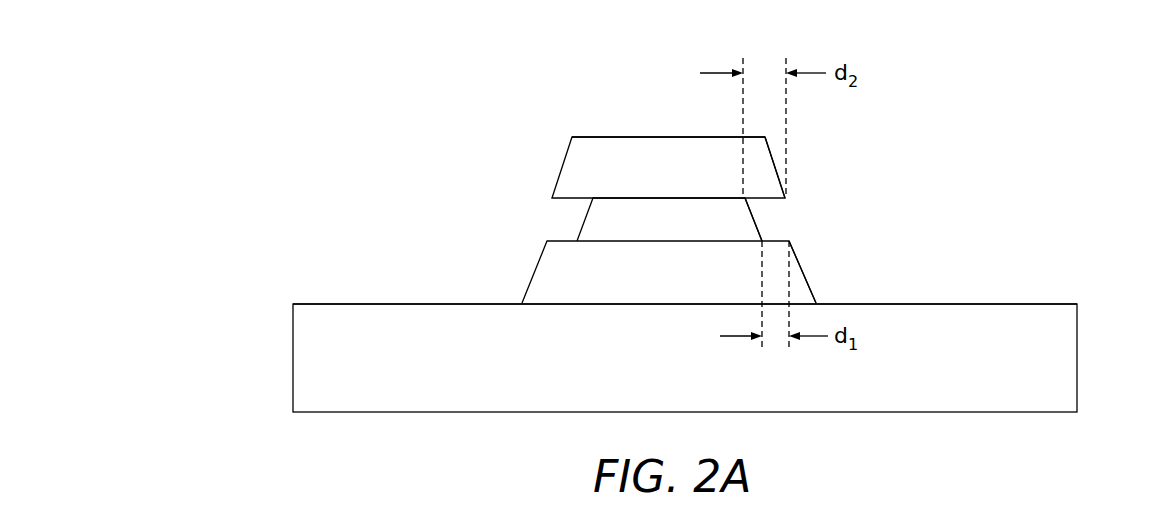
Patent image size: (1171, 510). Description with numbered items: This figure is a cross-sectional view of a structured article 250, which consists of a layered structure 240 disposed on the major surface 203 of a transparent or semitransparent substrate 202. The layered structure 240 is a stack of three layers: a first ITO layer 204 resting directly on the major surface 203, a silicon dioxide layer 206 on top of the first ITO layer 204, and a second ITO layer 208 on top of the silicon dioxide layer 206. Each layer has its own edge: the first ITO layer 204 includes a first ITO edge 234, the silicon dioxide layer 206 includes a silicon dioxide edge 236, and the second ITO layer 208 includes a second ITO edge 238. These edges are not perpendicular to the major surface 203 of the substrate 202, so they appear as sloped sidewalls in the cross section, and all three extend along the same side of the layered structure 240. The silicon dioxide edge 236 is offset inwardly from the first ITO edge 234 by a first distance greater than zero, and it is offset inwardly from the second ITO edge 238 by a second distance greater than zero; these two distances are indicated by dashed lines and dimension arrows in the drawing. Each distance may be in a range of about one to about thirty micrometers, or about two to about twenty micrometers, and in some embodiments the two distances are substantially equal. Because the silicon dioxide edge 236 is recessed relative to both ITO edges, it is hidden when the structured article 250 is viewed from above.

The structured article 250 is at (440, 74).
The transparent or semitransparent substrate 202 is at (1043, 358).
The major surface 203 is at (1020, 303).
The first ITO layer 204 is at (548, 276).
The silicon dioxide layer 206 is at (590, 221).
The second ITO layer 208 is at (577, 162).
The first ITO edge 234 is at (797, 264).
The silicon dioxide edge 236 is at (753, 221).
The second ITO edge 238 is at (773, 160).
The layered structure 240 is at (643, 137).